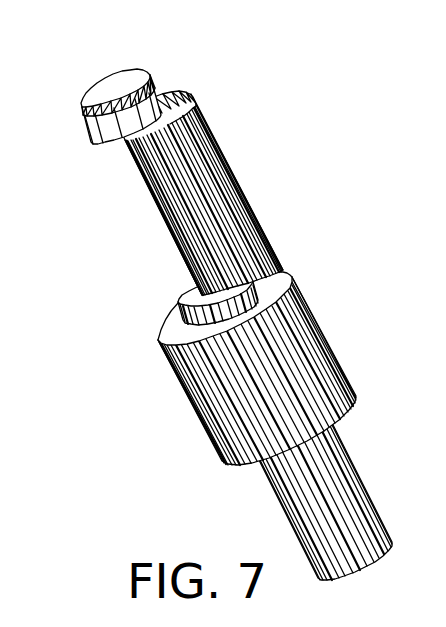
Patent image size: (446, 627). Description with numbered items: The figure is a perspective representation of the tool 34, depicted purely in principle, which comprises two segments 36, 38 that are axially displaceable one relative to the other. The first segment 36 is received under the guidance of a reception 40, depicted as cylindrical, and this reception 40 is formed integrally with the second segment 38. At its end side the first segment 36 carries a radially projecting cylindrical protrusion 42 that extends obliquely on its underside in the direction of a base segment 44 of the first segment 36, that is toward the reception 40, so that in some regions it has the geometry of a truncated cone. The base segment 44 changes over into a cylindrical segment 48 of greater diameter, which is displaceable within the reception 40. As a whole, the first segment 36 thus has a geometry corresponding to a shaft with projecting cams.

The tool 34 is at (259, 70).
The first segment 36 is at (143, 153).
The second segment 38 is at (210, 156).
The reception 40 is at (267, 296).
The cylindrical protrusion 42 is at (100, 122).
The base segment 44 is at (170, 235).
The cylindrical segment 48 is at (158, 340).